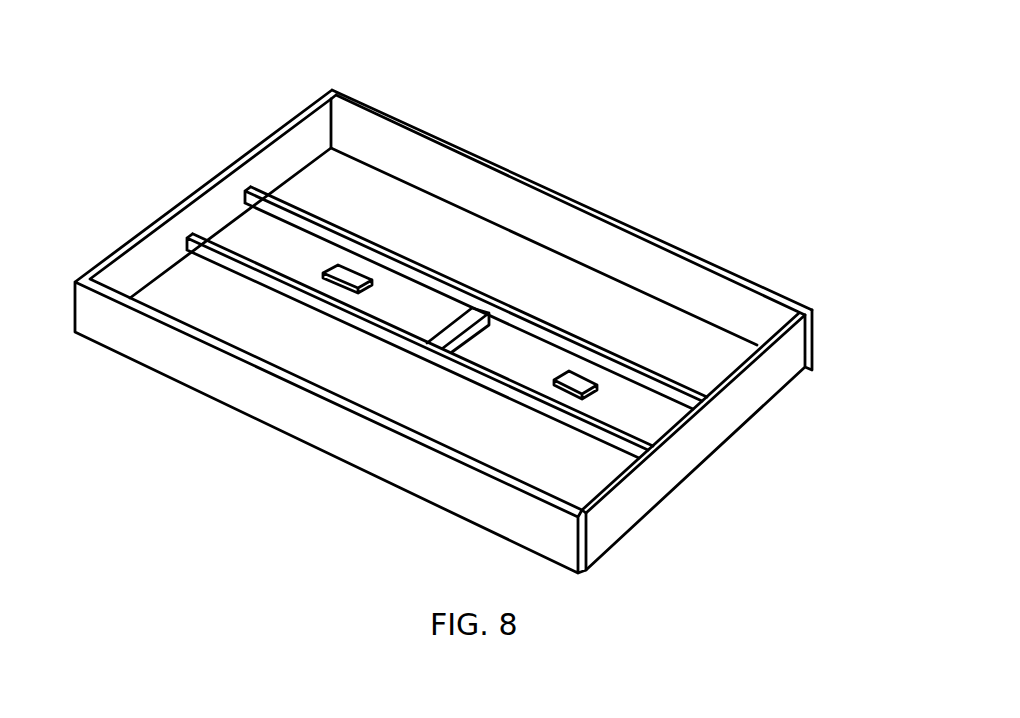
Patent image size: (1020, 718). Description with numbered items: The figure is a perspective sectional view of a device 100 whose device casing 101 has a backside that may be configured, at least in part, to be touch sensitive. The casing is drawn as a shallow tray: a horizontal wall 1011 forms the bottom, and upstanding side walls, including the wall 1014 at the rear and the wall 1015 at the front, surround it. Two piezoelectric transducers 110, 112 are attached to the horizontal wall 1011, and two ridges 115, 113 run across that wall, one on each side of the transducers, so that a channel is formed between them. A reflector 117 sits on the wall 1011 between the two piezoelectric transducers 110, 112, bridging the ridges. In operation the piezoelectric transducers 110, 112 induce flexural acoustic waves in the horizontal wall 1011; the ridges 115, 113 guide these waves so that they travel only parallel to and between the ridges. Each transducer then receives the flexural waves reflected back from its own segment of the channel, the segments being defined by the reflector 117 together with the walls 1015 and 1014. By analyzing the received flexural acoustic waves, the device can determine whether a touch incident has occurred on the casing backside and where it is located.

The device 100 is at (463, 299).
The device casing 101 is at (250, 146).
The wall 1014 is at (182, 202).
The wall 1015 is at (735, 393).
The horizontal wall 1011 is at (424, 233).
The ridge 115 is at (561, 331).
The ridge 113 is at (283, 292).
The reflector 117 is at (473, 313).
The piezoelectric transducer 112 is at (325, 268).
The piezoelectric transducer 110 is at (597, 387).